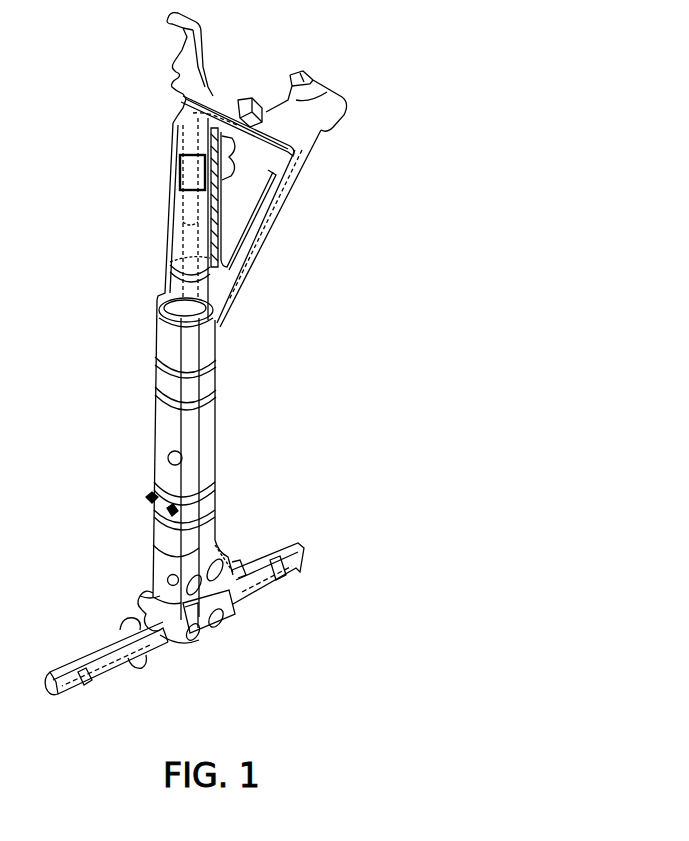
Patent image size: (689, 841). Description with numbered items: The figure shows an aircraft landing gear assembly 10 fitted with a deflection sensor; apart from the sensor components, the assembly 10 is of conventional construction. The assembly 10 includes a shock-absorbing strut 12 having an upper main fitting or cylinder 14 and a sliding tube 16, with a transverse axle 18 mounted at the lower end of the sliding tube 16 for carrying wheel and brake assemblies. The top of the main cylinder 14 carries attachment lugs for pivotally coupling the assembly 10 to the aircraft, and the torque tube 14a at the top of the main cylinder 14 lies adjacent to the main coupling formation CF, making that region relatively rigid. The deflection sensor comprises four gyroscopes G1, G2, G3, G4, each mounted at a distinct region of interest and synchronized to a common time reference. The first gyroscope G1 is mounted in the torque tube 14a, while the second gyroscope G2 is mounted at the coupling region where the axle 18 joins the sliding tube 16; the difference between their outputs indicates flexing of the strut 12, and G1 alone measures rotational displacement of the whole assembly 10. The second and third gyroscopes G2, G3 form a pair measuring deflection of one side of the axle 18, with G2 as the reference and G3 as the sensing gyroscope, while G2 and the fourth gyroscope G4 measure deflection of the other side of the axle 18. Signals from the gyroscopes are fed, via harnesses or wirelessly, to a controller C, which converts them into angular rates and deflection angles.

The aircraft landing gear assembly 10 is at (463, 133).
The shock-absorbing strut 12 is at (153, 380).
The main fitting or cylinder 14 is at (219, 372).
The torque tube 14a is at (193, 110).
The sliding tube 16 is at (136, 594).
The transverse axle 18 is at (150, 656).
The controller C is at (186, 172).
The main coupling formation CF is at (319, 125).
The first gyroscope G1 is at (252, 110).
The second gyroscope G2 is at (216, 633).
The third gyroscope G3 is at (270, 565).
The fourth gyroscope G4 is at (88, 665).